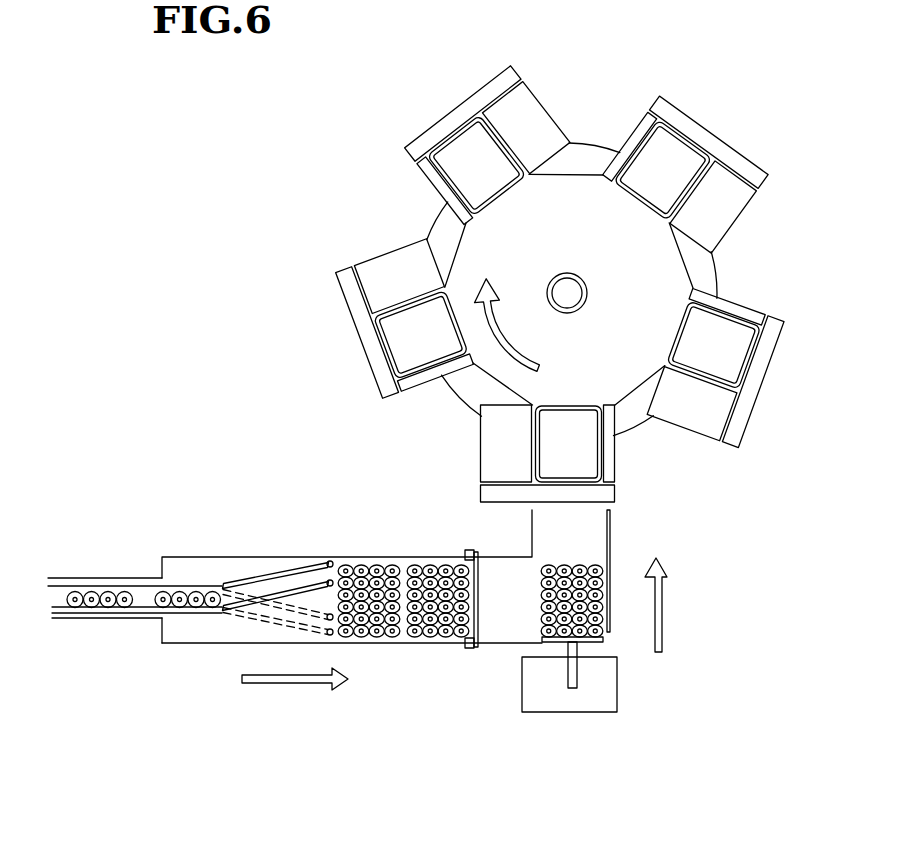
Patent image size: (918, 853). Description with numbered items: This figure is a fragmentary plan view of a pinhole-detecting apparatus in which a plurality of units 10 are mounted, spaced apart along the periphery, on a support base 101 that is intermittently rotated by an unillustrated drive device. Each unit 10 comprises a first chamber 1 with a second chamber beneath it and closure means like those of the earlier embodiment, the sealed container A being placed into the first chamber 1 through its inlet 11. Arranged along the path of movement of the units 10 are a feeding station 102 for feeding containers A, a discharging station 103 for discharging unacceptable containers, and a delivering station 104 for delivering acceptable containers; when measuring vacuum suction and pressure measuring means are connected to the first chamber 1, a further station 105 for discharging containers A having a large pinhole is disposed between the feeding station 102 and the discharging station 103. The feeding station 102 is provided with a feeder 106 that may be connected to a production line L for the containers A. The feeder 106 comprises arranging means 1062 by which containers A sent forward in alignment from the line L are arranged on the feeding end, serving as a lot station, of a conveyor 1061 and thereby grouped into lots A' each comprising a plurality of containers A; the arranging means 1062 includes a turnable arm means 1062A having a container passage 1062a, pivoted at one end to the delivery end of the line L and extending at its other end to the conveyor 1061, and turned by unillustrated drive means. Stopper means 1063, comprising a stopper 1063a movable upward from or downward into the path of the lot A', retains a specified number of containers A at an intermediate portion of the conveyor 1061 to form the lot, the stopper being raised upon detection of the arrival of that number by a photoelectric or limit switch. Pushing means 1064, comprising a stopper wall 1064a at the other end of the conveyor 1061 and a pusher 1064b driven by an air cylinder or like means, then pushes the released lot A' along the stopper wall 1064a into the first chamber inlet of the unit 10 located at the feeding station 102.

The first chamber 1 is at (506, 139).
The unit 10 is at (607, 185).
The inlet 11 is at (587, 443).
The support base 101 is at (663, 277).
The feeding station 102 is at (587, 452).
The discharging station 103 is at (458, 157).
The delivering station 104 is at (668, 158).
The large-pinhole discharging station 105 is at (422, 362).
The feeder 106 is at (419, 662).
The conveyor 1061 is at (388, 653).
The arranging means 1062 is at (290, 570).
The container passage 1062a is at (263, 587).
The turnable arm means 1062A is at (245, 607).
The stopper means 1063 is at (480, 584).
The stopper 1063a is at (480, 618).
The pushing means 1064 is at (582, 672).
The stopper wall 1064a is at (610, 536).
The pusher 1064b is at (557, 642).
The sealed container A is at (144, 565).
The lot A' is at (498, 566).
The production line L is at (57, 597).